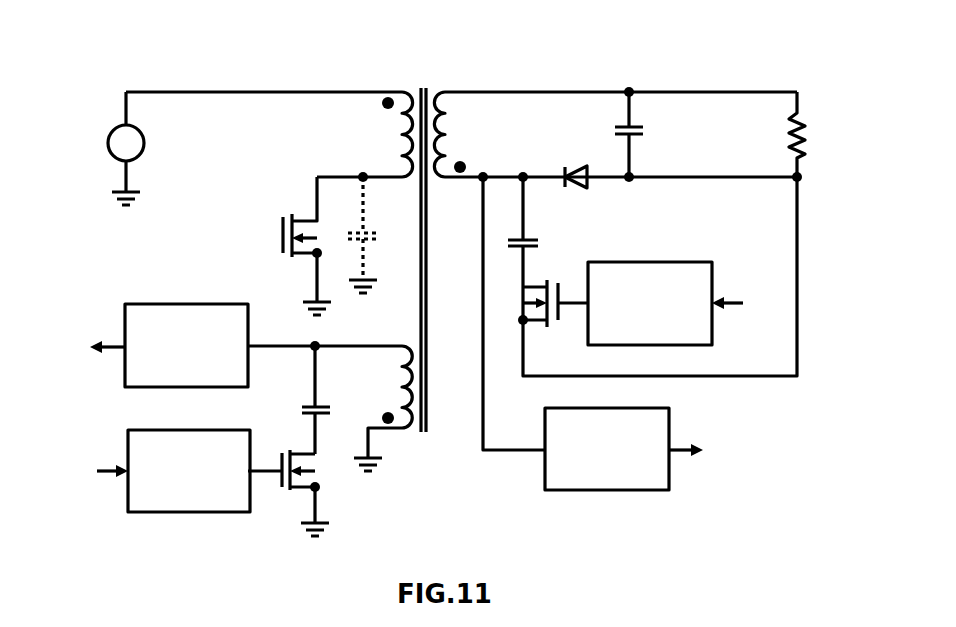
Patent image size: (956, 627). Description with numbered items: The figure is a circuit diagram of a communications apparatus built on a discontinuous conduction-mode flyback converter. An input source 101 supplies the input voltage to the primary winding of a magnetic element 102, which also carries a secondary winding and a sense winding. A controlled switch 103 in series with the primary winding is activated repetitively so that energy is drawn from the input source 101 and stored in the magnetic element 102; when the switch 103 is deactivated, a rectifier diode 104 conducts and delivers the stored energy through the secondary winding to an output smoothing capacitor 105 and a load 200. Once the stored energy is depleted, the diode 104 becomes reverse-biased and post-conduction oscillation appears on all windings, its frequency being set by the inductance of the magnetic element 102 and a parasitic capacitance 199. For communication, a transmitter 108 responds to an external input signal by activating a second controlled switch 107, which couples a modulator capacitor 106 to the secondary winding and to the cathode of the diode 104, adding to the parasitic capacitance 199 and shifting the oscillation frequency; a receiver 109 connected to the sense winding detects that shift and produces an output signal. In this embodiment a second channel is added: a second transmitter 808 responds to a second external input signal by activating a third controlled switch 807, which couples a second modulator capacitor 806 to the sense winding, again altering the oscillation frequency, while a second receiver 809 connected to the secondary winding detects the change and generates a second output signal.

The input source 101 is at (150, 143).
The magnetic element 102 is at (423, 77).
The controlled switch 103 is at (295, 208).
The rectifier diode 104 is at (577, 160).
The output smoothing capacitor 105 is at (650, 130).
The modulator capacitor 106 is at (545, 241).
The second controlled switch 107 is at (557, 280).
The transmitter 108 is at (647, 257).
The receiver 109 is at (143, 300).
The parasitic capacitance 199 is at (372, 242).
The load 200 is at (810, 108).
The second modulator capacitor 806 is at (293, 418).
The third controlled switch 807 is at (325, 475).
The second transmitter 808 is at (188, 518).
The second receiver 809 is at (608, 497).